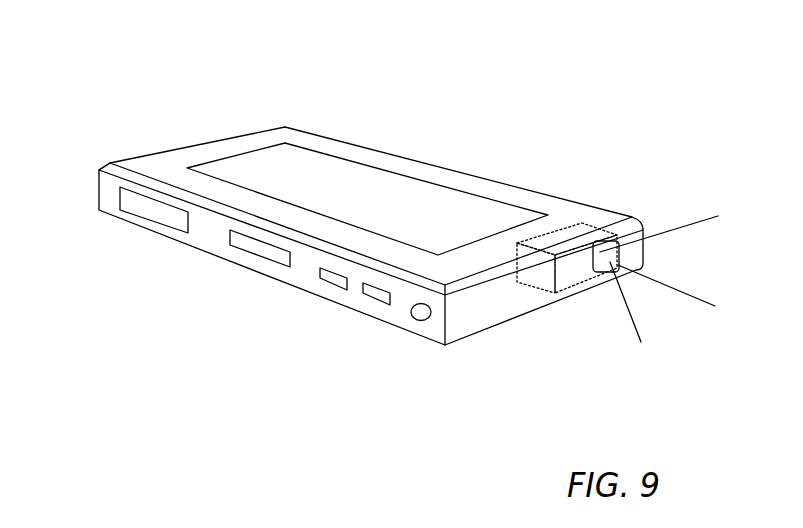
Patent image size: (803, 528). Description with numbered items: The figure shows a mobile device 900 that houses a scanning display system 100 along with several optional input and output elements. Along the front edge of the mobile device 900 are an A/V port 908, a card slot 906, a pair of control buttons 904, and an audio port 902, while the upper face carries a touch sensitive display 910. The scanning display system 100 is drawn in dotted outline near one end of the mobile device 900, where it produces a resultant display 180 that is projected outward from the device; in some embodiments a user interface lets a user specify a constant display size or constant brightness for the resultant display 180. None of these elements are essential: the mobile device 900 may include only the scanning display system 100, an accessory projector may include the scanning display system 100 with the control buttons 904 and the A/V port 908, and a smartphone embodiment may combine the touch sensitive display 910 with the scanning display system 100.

The mobile device 900 is at (672, 77).
The touch sensitive display 910 is at (384, 190).
The audio/video (A/V) port 908 is at (138, 207).
The card slot 906 is at (253, 247).
The control buttons 904 is at (368, 295).
The audio port 902 is at (419, 321).
The scanning display system 100 is at (583, 225).
The resultant display 180 is at (655, 279).